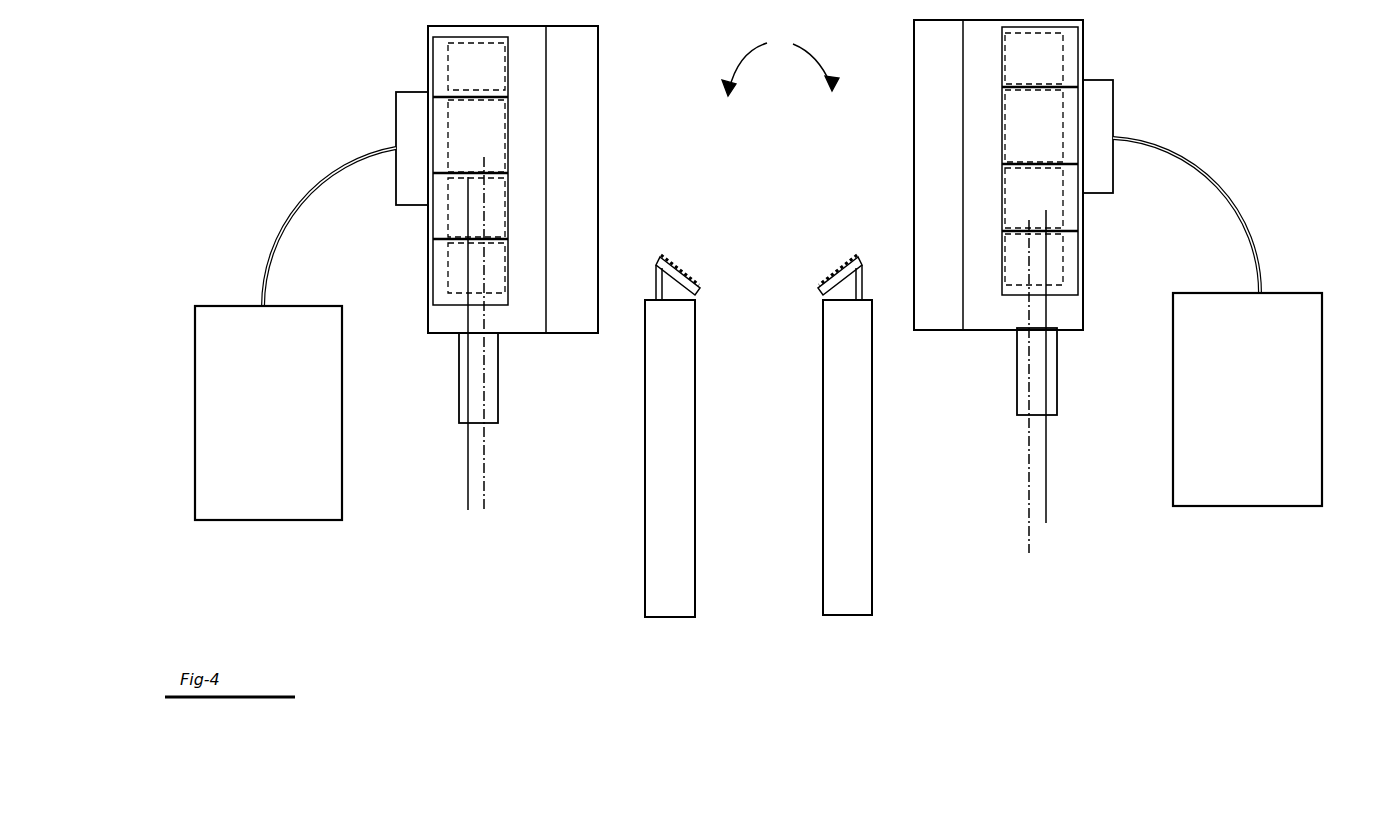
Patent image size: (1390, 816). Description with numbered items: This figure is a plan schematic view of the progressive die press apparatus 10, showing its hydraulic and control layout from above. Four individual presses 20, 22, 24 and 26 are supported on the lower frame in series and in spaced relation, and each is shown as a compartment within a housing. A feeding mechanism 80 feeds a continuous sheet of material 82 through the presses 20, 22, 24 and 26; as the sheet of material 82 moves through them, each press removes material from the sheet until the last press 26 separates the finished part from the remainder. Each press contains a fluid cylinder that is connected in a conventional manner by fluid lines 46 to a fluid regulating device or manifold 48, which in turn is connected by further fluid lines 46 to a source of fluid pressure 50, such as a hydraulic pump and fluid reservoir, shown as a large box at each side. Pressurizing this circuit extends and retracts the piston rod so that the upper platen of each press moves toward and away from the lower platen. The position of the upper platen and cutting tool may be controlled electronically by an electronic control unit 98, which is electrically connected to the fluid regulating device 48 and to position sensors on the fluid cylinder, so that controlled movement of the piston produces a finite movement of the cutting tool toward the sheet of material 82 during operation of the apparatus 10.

The apparatus 10 is at (780, 65).
The press 20 is at (514, 266).
The press 22 is at (514, 204).
The press 24 is at (514, 131).
The press 26 is at (514, 72).
The fluid lines 46 is at (341, 178).
The fluid regulating device 48 is at (1097, 113).
The source of fluid pressure 50 is at (313, 483).
The feeding mechanism 80 is at (493, 355).
The sheet of material 82 is at (477, 472).
The electronic control unit 98 is at (895, 446).